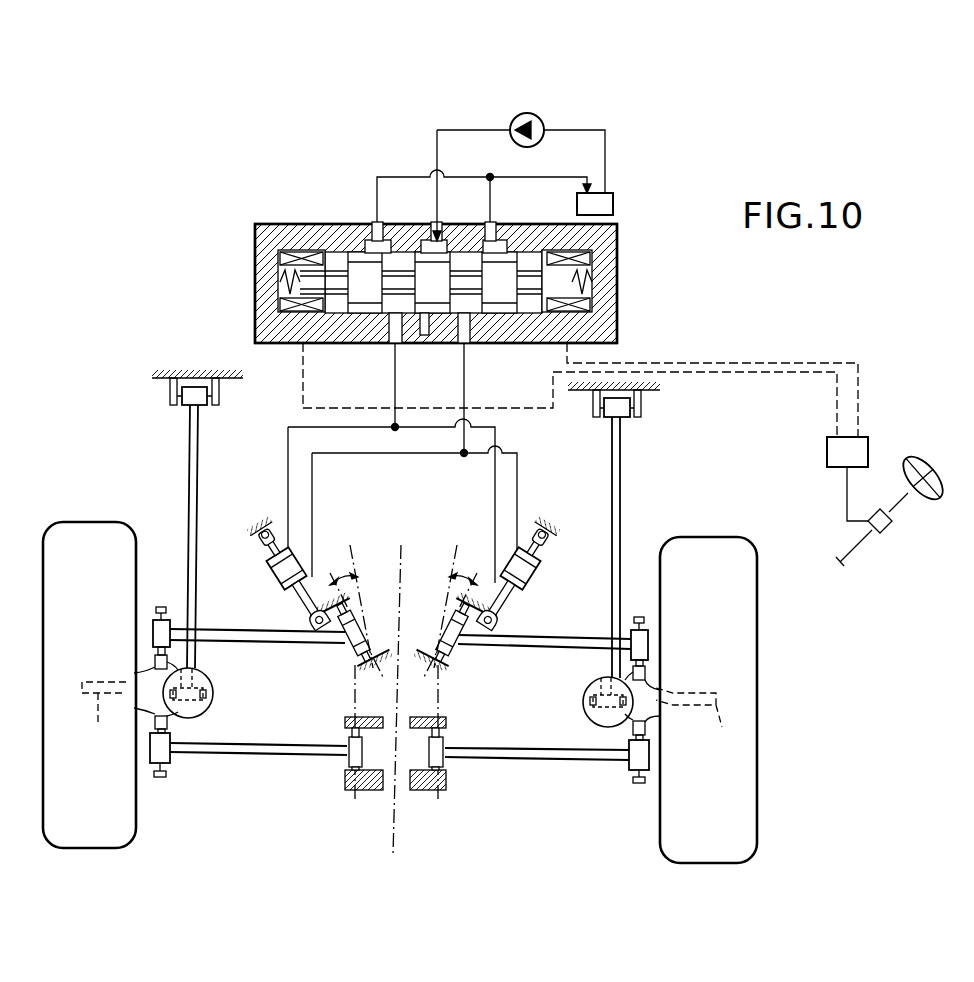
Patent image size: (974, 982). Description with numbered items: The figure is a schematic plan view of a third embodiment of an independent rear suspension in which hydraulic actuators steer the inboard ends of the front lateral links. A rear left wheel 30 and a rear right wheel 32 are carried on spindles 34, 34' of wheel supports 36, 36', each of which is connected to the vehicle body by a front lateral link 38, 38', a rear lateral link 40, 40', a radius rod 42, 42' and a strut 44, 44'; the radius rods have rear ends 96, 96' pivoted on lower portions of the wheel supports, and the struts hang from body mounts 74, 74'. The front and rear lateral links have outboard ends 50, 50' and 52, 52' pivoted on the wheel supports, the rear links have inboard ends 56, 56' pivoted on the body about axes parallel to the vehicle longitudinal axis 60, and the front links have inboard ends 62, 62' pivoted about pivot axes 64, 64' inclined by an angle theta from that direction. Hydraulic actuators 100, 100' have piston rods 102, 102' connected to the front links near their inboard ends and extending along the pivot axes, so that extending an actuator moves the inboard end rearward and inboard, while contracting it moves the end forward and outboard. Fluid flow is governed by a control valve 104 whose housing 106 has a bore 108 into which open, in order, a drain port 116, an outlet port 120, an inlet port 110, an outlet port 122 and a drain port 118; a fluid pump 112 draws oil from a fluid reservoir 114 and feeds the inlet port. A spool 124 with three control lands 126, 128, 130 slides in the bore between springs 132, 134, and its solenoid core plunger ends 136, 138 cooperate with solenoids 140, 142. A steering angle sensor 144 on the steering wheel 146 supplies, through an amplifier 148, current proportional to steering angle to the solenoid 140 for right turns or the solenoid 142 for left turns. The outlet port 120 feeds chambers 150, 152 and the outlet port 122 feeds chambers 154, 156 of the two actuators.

The rear left wheel 30 is at (126, 834).
The rear right wheel 32 is at (663, 849).
The spindle 34 is at (102, 716).
The spindle 34' is at (696, 721).
The wheel support 36 is at (131, 683).
The wheel support 36' is at (660, 722).
The front lateral link 38 is at (257, 619).
The front lateral link 38' is at (544, 632).
The rear lateral link 40 is at (258, 770).
The rear lateral link 40' is at (537, 775).
The radius rod 42 is at (165, 536).
The radius rod 42' is at (641, 547).
The strut 44 is at (214, 699).
The strut 44' is at (584, 704).
The outboard end 50 is at (157, 621).
The outboard end 50' is at (643, 630).
The outboard end 52 is at (176, 756).
The outboard end 52' is at (615, 768).
The inboard end 56 is at (344, 732).
The inboard end 56' is at (454, 736).
The vehicle longitudinal axis 60 is at (395, 800).
The inboard end 62 is at (349, 625).
The inboard end 62' is at (455, 625).
The pivot axis 64 is at (346, 597).
The pivot axis 64' is at (459, 597).
The left upright mount 74 is at (197, 411).
The right upright mount 74' is at (620, 423).
The rear end 96 is at (217, 684).
The rear end 96' is at (580, 692).
The hydraulic actuator 100 is at (258, 562).
The hydraulic actuator 100' is at (548, 563).
The piston rod 102 is at (297, 604).
The piston rod 102' is at (508, 604).
The control valve 104 is at (266, 219).
The housing 106 is at (258, 238).
The bore 108 is at (333, 326).
The inlet port 110 is at (440, 236).
The fluid pump 112 is at (541, 126).
The fluid reservoir 114 is at (615, 200).
The drain port 116 is at (375, 232).
The drain port 118 is at (496, 235).
The outlet port 120 is at (390, 348).
The outlet port 122 is at (470, 340).
The spool 124 is at (455, 320).
The control land 126 is at (356, 258).
The control land 128 is at (424, 338).
The control land 130 is at (515, 322).
The spring 132 is at (288, 282).
The spring 134 is at (586, 284).
The solenoid core plunger end 136 is at (283, 260).
The solenoid core plunger end 138 is at (588, 260).
The solenoid 140 is at (298, 316).
The solenoid 142 is at (580, 316).
The steering angle sensor 144 is at (886, 535).
The steering wheel 146 is at (931, 496).
The amplifier 148 is at (828, 450).
The chamber 150 is at (260, 535).
The chamber 152 is at (522, 598).
The chamber 154 is at (286, 586).
The chamber 156 is at (540, 554).